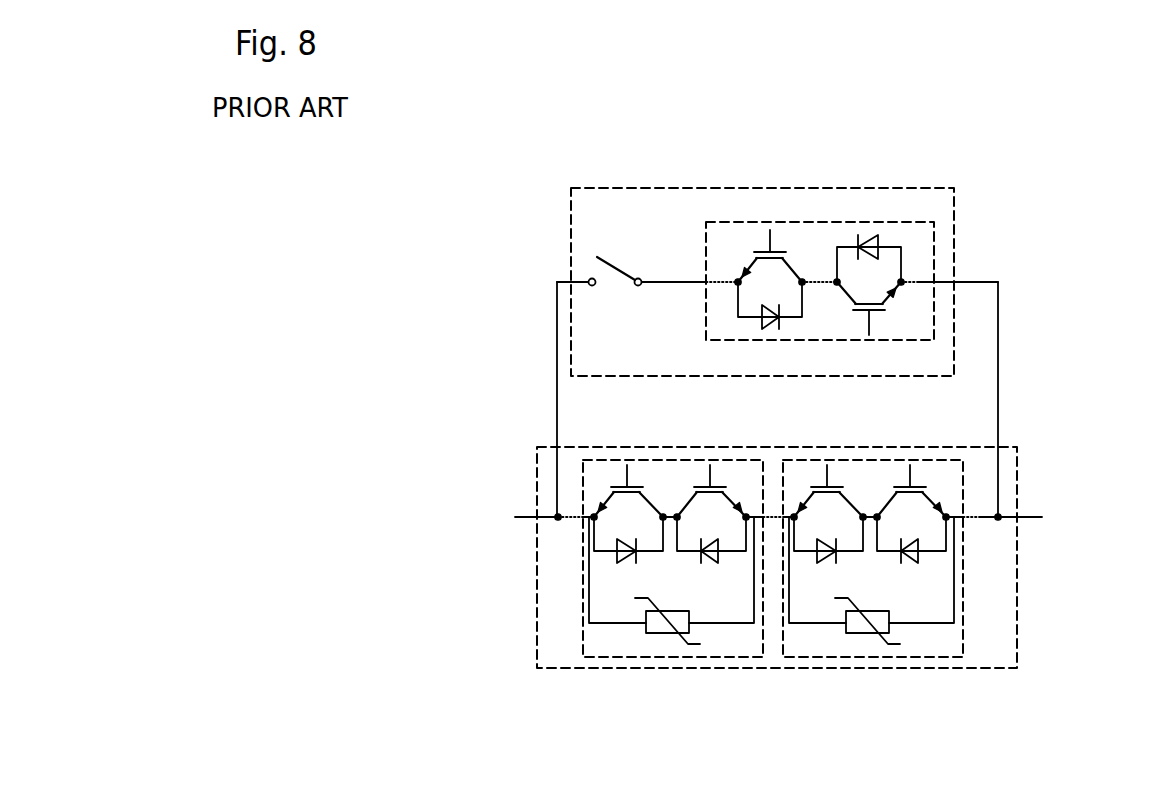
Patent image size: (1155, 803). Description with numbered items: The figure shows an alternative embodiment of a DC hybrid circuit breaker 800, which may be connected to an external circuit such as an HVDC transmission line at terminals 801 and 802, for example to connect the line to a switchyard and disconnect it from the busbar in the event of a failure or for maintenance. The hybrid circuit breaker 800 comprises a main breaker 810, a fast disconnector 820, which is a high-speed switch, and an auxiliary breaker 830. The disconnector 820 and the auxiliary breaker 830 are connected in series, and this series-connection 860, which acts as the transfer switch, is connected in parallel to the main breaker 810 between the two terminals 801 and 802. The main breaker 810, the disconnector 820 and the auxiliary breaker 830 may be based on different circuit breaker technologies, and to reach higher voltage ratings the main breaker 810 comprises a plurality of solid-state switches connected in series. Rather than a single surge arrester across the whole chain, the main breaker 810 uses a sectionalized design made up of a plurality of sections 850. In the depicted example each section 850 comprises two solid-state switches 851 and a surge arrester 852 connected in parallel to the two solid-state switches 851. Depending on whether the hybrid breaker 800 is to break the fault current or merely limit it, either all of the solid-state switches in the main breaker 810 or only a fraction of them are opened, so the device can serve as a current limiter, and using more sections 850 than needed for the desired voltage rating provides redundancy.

The DC hybrid circuit breaker 800 is at (499, 767).
The terminal 801 is at (520, 515).
The terminal 802 is at (1028, 513).
The main breaker 810 is at (742, 595).
The fast disconnector 820 is at (631, 255).
The auxiliary breaker 830 is at (827, 286).
The section 850 is at (580, 643).
The solid-state switch 851 is at (611, 564).
The surge arrester 852 is at (642, 636).
The series-connection (transfer switch) 860 is at (755, 278).